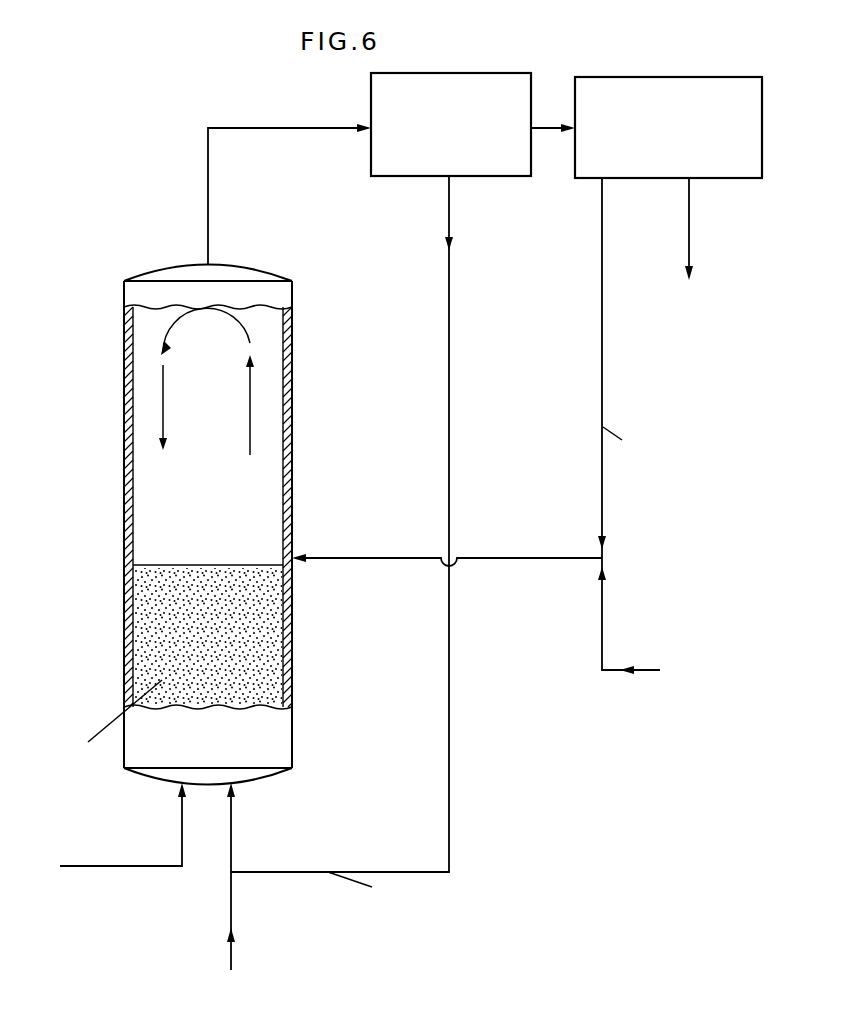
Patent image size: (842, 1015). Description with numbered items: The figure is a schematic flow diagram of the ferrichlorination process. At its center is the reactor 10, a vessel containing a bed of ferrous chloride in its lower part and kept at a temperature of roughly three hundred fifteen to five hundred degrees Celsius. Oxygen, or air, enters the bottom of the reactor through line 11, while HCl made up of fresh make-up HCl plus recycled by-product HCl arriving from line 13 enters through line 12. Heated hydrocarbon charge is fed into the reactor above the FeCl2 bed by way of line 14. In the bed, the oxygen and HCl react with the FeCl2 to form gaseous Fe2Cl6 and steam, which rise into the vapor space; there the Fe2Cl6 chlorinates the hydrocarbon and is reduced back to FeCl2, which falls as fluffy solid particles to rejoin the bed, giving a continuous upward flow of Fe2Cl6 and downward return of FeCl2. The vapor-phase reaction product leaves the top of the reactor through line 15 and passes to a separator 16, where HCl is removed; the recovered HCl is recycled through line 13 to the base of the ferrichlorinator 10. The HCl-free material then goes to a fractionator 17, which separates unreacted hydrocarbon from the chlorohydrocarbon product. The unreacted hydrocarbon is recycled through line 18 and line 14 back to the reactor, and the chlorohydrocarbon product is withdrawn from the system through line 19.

The reactor 10 is at (125, 320).
The line 11 is at (108, 870).
The line 12 is at (233, 846).
The line 13 is at (449, 789).
The line 14 is at (350, 557).
The line 15 is at (207, 170).
The separator 16 is at (475, 73).
The fractionator 17 is at (690, 77).
The line 18 is at (602, 241).
The line 19 is at (689, 230).